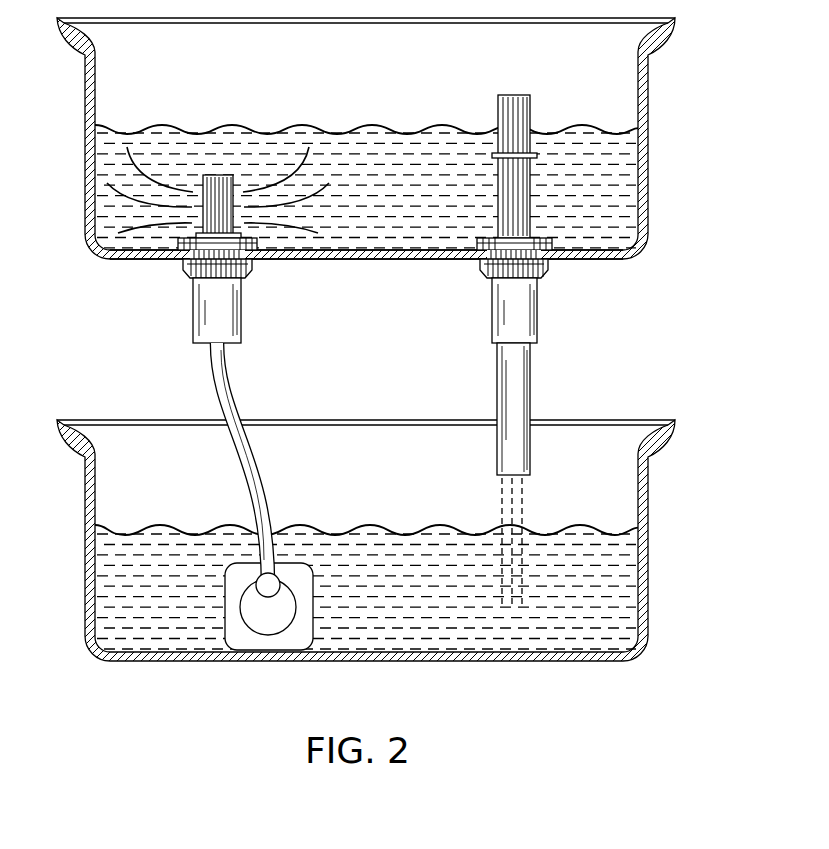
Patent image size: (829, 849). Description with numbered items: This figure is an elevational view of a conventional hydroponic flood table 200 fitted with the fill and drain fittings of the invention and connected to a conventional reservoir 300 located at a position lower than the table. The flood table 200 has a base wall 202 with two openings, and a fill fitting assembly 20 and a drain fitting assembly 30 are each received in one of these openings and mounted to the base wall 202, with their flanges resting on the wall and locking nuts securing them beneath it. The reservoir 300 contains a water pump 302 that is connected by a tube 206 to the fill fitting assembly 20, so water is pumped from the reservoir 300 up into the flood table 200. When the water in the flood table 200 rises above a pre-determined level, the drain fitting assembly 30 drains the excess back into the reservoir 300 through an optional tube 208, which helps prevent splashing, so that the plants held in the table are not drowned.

The fill fitting assembly 20 is at (178, 280).
The drain fitting assembly 30 is at (548, 300).
The hydroponic flood table 200 is at (651, 104).
The base wall 202 is at (347, 262).
The tube 206 is at (224, 399).
The tube 208 is at (518, 390).
The reservoir 300 is at (652, 562).
The water pump 302 is at (242, 642).